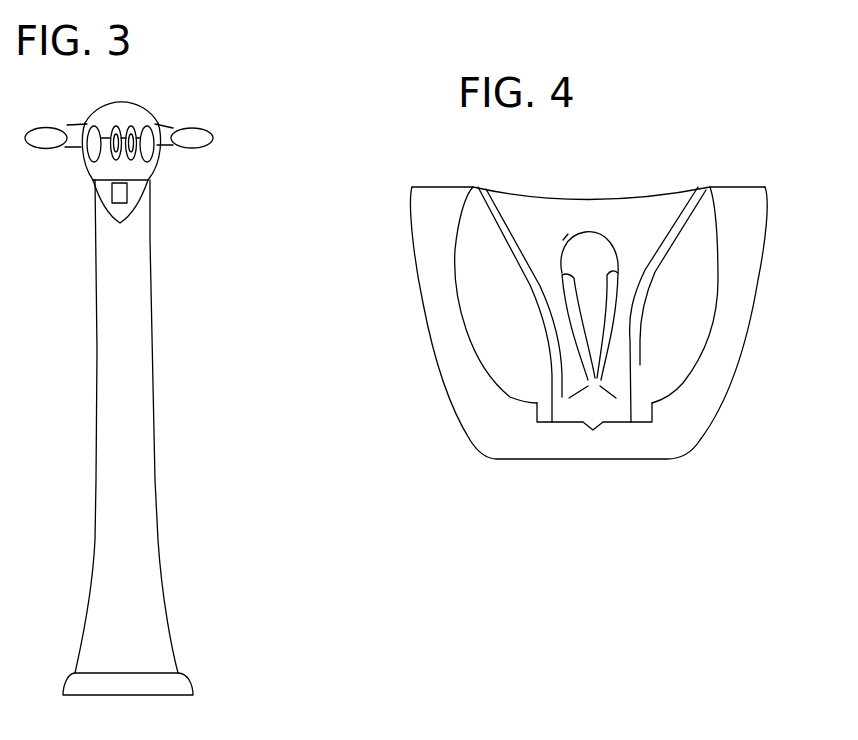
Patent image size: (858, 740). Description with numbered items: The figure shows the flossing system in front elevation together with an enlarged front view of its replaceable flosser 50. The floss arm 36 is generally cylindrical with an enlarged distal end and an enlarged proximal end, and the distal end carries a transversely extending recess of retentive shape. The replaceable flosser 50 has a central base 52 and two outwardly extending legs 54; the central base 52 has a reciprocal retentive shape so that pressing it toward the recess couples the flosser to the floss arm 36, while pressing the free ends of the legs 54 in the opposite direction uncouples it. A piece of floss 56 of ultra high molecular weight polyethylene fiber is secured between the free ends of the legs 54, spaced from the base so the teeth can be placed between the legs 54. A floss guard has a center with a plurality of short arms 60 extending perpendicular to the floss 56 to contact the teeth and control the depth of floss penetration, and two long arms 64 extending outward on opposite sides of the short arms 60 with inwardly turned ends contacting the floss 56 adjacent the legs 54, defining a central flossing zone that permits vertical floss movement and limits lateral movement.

In FIG. 3, the floss arm 36 is at (97, 348).
In FIG. 4, the replaceable flosser 50 is at (212, 145).
In FIG. 4, the central base 52 is at (600, 460).
In FIG. 4, the legs 54 is at (412, 187).
In FIG. 4, the floss 56 is at (583, 200).
In FIG. 4, the short arms 60 is at (589, 301).
In FIG. 4, the long arms 64 is at (478, 187).